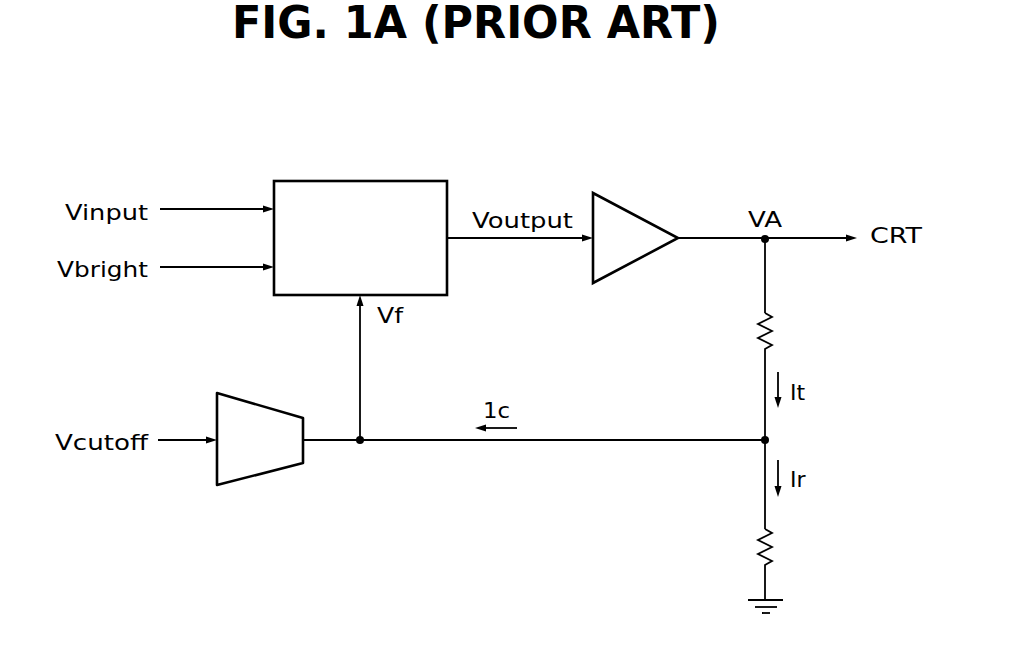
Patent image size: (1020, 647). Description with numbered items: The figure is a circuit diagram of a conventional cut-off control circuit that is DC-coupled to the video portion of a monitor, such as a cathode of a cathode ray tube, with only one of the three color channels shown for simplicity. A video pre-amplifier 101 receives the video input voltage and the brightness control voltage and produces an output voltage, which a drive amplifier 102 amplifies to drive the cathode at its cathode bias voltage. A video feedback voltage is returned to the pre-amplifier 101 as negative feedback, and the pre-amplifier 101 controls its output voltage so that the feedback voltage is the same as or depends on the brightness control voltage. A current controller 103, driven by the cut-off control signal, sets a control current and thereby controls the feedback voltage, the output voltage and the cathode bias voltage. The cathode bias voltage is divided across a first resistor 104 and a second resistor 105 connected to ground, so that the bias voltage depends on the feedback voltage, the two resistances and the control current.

The video pre-amplifier 101 is at (357, 181).
The drive amplifier 102 is at (623, 207).
The current controller 103 is at (262, 400).
The resistor 104 is at (757, 334).
The resistor 105 is at (757, 548).